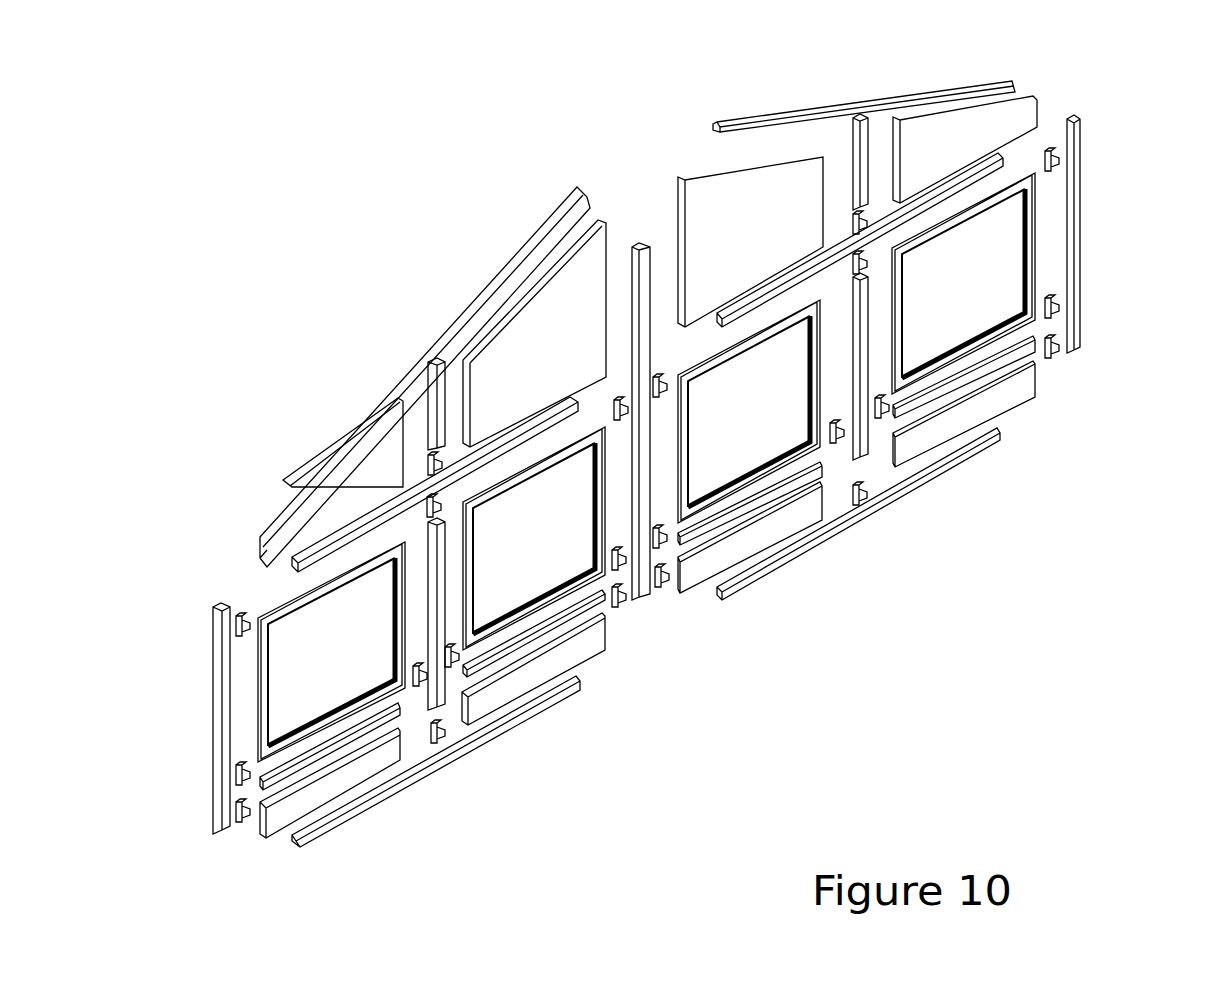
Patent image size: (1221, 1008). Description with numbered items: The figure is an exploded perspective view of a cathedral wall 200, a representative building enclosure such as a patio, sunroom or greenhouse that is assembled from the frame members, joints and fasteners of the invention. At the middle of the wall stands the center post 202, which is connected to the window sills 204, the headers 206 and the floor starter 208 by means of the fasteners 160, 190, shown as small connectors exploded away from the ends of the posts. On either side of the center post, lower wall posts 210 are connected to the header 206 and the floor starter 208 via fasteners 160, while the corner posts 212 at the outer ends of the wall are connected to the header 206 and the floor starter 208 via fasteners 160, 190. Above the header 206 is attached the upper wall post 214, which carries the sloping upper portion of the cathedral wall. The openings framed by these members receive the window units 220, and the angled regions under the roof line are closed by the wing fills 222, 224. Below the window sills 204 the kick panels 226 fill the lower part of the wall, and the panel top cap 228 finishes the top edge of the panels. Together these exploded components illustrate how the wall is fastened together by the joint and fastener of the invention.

The cathedral wall 200 is at (303, 172).
The center post 202 is at (640, 243).
The window sill 204 is at (375, 723).
The header 206 is at (330, 582).
The floor starter 208 is at (500, 730).
The lower wall post 210 is at (392, 500).
The corner post 212 is at (220, 707).
The upper wall post 214 is at (430, 447).
The window unit 220 is at (450, 443).
The wing fill 222 is at (300, 472).
The wing fill 224 is at (588, 258).
The kick panel 226 is at (480, 725).
The panel top cap 228 is at (513, 262).
The fastener 160 is at (620, 405).
The fastener 190 is at (240, 812).